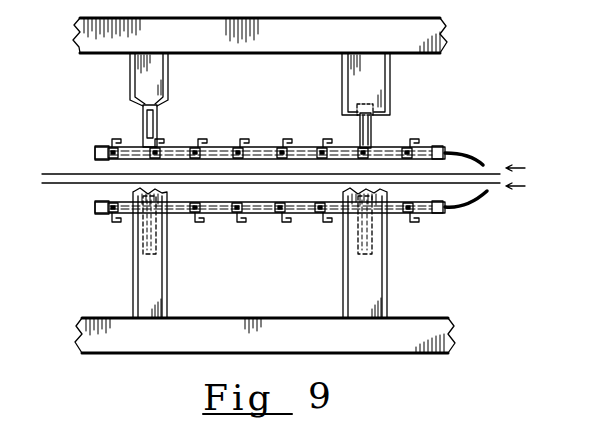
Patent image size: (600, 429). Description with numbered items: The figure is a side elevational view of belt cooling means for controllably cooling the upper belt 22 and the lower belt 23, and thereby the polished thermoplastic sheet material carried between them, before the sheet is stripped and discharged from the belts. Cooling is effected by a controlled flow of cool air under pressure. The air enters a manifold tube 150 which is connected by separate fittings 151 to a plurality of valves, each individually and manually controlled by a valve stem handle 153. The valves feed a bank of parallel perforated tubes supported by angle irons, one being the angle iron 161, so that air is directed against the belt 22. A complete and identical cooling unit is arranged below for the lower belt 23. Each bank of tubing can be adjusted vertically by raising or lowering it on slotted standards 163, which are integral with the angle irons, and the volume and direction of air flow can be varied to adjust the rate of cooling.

The belt 22 is at (56, 173).
The lower belt 23 is at (50, 184).
The manifold tube 150 is at (462, 151).
The fitting 151 is at (278, 147).
The valve stem handle 153 is at (328, 146).
The angle iron 161 is at (420, 147).
The slotted standard 163 is at (146, 128).